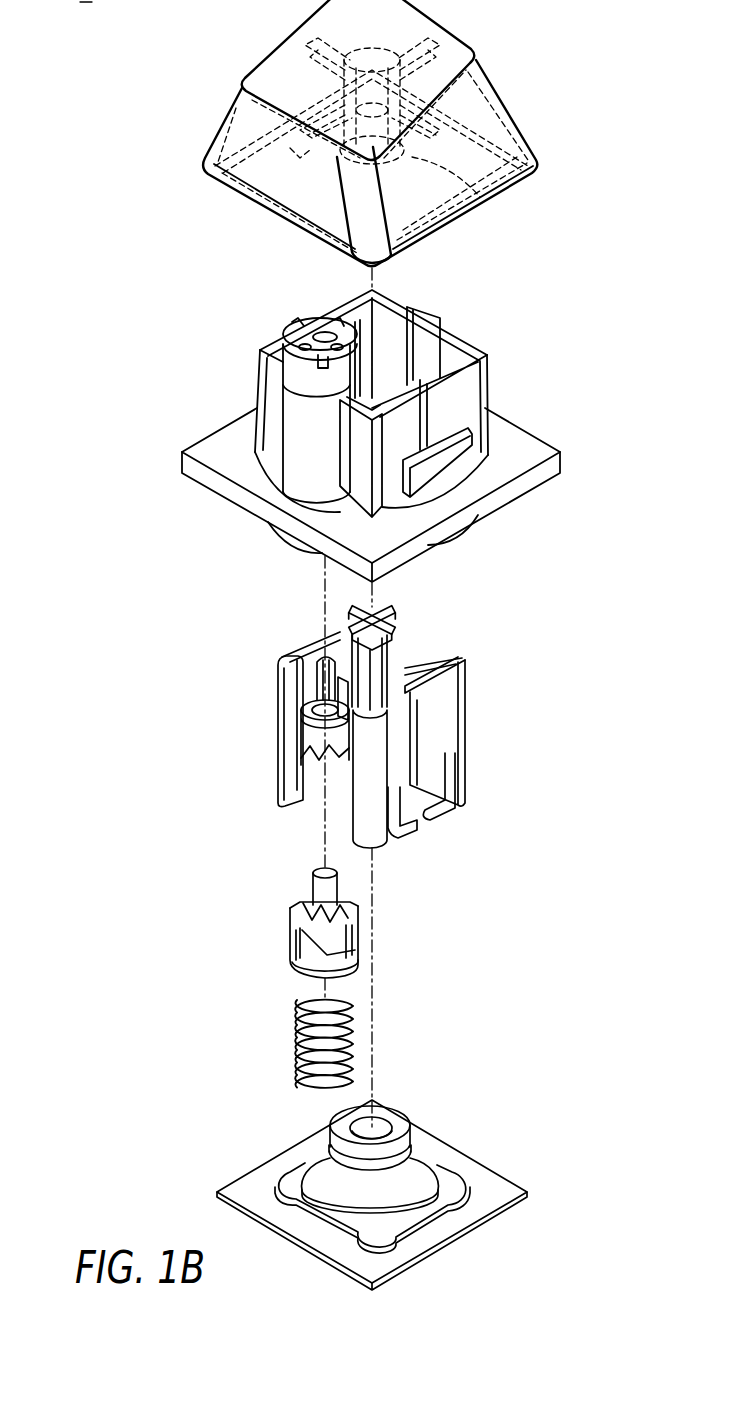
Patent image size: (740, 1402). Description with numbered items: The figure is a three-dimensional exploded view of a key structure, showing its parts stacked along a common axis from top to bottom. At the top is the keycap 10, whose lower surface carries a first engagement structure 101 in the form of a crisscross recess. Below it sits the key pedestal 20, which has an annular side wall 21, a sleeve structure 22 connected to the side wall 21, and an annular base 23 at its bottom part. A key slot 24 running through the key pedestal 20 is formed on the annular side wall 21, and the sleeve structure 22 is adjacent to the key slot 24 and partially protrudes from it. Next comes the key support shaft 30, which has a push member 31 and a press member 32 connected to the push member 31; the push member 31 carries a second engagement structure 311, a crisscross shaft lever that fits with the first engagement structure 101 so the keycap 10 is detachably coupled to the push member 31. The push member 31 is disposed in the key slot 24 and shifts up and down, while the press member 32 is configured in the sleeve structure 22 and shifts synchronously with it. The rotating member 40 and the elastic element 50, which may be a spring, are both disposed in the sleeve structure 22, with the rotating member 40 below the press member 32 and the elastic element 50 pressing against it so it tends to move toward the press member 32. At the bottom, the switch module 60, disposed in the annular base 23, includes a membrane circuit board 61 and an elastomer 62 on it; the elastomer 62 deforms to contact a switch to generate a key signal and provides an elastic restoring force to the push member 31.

The keycap 10 is at (386, 133).
The first engagement structure 101 is at (487, 207).
The key pedestal 20 is at (411, 428).
The annular side wall 21 is at (477, 385).
The sleeve structure 22 is at (290, 397).
The annular base 23 is at (460, 538).
The key slot 24 is at (382, 352).
The key support shaft 30 is at (387, 727).
The push member 31 is at (433, 732).
The second engagement structure 311 is at (396, 616).
The press member 32 is at (317, 732).
The rotating member 40 is at (300, 932).
The elastic element 50 is at (297, 1038).
The switch module 60 is at (411, 1188).
The membrane circuit board 61 is at (430, 1230).
The elastomer 62 is at (417, 1153).